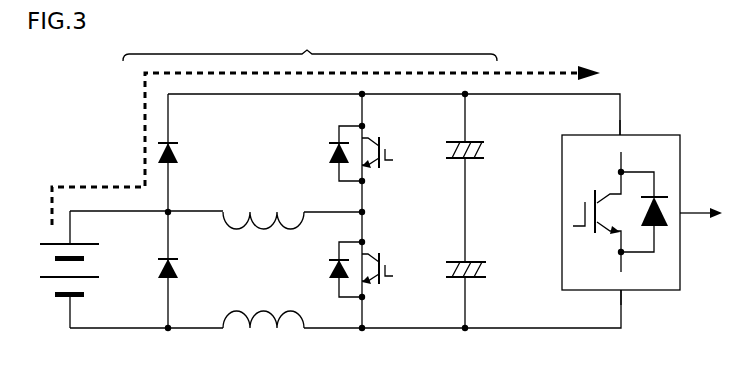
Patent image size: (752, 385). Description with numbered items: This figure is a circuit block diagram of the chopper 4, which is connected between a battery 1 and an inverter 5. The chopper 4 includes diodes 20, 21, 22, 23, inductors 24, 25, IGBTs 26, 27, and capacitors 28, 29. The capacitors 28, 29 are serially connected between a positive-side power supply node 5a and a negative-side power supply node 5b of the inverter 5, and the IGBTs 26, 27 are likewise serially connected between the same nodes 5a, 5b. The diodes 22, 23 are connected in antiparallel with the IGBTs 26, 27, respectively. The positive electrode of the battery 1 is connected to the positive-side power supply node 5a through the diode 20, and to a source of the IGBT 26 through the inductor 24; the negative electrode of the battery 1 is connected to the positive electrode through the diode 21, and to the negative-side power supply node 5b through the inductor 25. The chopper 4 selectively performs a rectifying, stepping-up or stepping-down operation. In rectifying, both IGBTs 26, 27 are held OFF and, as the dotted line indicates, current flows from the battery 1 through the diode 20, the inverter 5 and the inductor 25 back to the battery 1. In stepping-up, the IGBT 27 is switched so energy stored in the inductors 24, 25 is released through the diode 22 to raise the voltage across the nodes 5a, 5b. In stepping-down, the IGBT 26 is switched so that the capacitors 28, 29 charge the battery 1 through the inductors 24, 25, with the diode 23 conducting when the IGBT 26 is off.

The battery 1 is at (50, 242).
The chopper 4 is at (326, 127).
The inverter 5 is at (681, 152).
The positive-side power supply node 5a is at (622, 133).
The negative-side power supply node 5b is at (623, 293).
The diode 20 is at (180, 151).
The diode 21 is at (180, 269).
The diode 22 is at (328, 154).
The diode 23 is at (328, 271).
The inductor 24 is at (263, 232).
The inductor 25 is at (265, 330).
The IGBT 26 is at (394, 154).
The IGBT 27 is at (394, 270).
The capacitor 28 is at (476, 141).
The capacitor 29 is at (478, 261).